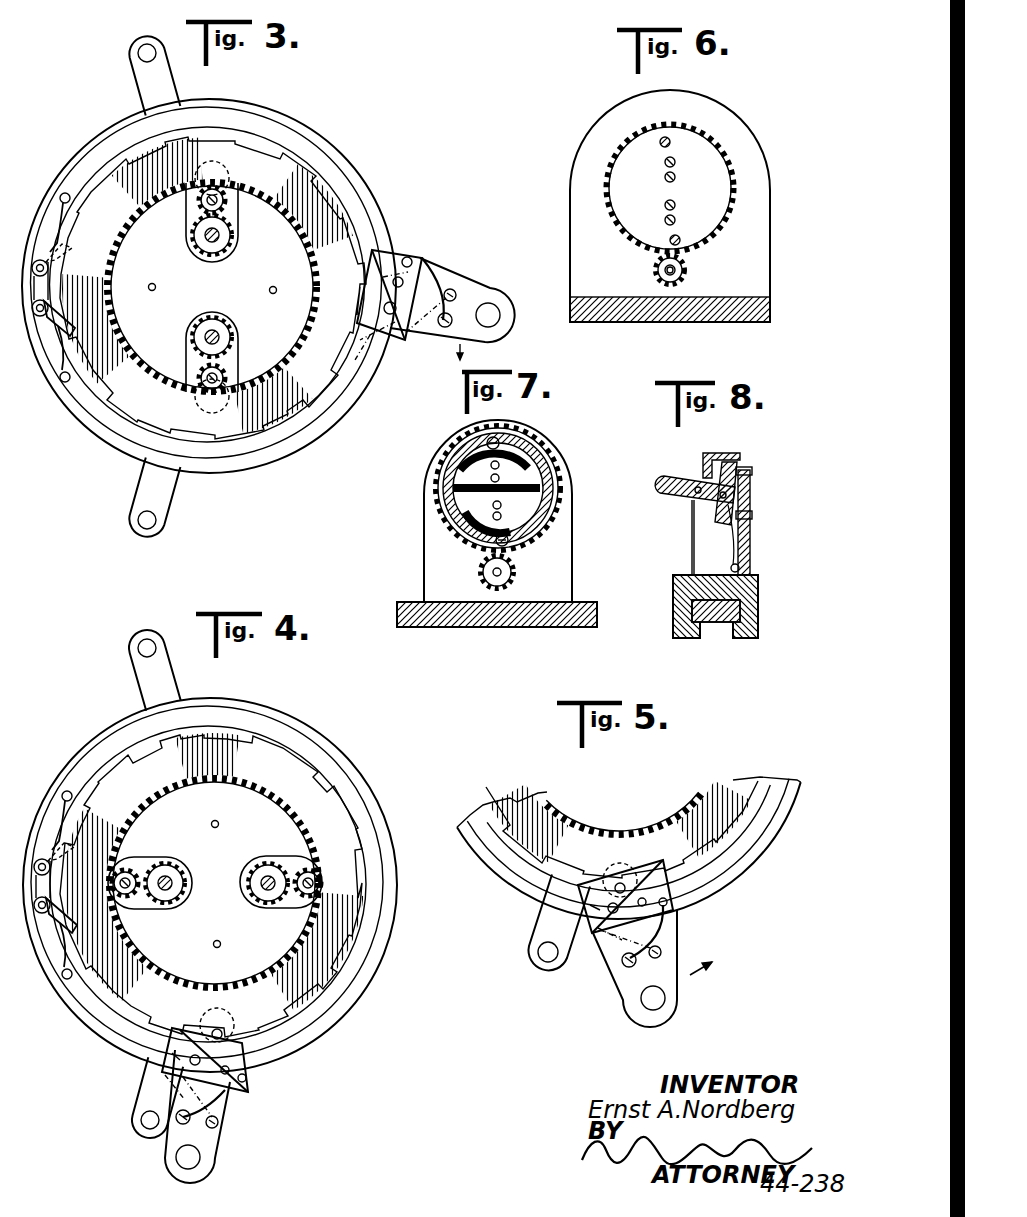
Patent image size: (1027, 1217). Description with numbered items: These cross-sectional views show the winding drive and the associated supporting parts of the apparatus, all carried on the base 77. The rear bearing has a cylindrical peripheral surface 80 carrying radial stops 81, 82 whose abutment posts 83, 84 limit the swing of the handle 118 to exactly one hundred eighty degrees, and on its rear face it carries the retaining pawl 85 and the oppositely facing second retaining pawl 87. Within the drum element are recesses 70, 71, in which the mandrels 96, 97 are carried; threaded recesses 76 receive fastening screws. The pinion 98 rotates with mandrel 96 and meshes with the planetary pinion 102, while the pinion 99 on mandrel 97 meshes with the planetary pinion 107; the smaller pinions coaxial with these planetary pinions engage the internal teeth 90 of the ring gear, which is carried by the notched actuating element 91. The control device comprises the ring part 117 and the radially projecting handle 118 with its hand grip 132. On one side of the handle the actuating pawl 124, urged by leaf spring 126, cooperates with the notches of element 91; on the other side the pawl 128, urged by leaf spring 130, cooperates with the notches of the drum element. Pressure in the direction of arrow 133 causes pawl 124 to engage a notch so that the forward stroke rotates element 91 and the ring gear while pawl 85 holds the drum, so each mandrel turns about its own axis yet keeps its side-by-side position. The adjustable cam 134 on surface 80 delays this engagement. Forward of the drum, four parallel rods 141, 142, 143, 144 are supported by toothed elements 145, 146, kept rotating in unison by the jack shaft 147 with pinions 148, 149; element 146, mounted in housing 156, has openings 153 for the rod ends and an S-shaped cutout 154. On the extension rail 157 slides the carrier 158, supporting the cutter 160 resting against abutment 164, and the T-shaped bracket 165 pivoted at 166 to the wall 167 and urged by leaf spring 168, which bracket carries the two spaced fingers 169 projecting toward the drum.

In FIG. 3, the recess 70 is at (236, 226).
In FIG. 4, the recess 70 is at (283, 858).
In FIG. 3, the recess 71 is at (240, 354).
In FIG. 4, the recess 71 is at (149, 910).
In FIG. 3, the threaded recesses 76 is at (156, 287).
In FIG. 4, the threaded recesses 76 is at (212, 823).
In FIG. 6, the base 77 is at (641, 318).
In FIG. 7, the base 77 is at (451, 622).
In FIG. 3, the peripheral surface 80 is at (317, 145).
In FIG. 4, the peripheral surface 80 is at (384, 840).
In FIG. 5, the peripheral surface 80 is at (629, 848).
In FIG. 3, the radial stop 81 is at (138, 81).
In FIG. 4, the radial stop 81 is at (138, 684).
In FIG. 3, the radial stop 82 is at (124, 488).
In FIG. 4, the radial stop 82 is at (136, 1098).
In FIG. 5, the radial stop 82 is at (540, 937).
In FIG. 3, the abutment post 83 is at (138, 53).
In FIG. 4, the abutment post 83 is at (139, 645).
In FIG. 3, the abutment post 84 is at (137, 520).
In FIG. 4, the abutment post 84 is at (140, 1121).
In FIG. 5, the abutment post 84 is at (546, 963).
In FIG. 3, the retaining pawl 85 is at (40, 257).
In FIG. 4, the retaining pawl 85 is at (42, 856).
In FIG. 3, the second retaining pawl 87 is at (58, 328).
In FIG. 4, the second retaining pawl 87 is at (60, 932).
In FIG. 3, the internal teeth 90 is at (308, 233).
In FIG. 4, the internal teeth 90 is at (274, 802).
In FIG. 5, the internal teeth 90 is at (657, 823).
In FIG. 3, the notched actuating element 91 is at (334, 162).
In FIG. 4, the notched actuating element 91 is at (308, 778).
In FIG. 5, the notched actuating element 91 is at (723, 817).
In FIG. 3, the mandrel 96 is at (228, 258).
In FIG. 4, the mandrel 96 is at (262, 872).
In FIG. 6, the mandrel 96 is at (662, 138).
In FIG. 7, the mandrel 96 is at (500, 442).
In FIG. 3, the mandrel 97 is at (222, 338).
In FIG. 4, the mandrel 97 is at (172, 878).
In FIG. 6, the mandrel 97 is at (681, 243).
In FIG. 7, the mandrel 97 is at (508, 546).
In FIG. 3, the pinion 98 is at (198, 253).
In FIG. 4, the pinion 98 is at (256, 905).
In FIG. 3, the pinion 99 is at (196, 326).
In FIG. 4, the pinion 99 is at (182, 895).
In FIG. 3, the planetary pinion 102 is at (198, 215).
In FIG. 4, the planetary pinion 102 is at (296, 902).
In FIG. 3, the planetary pinion 107 is at (198, 364).
In FIG. 4, the planetary pinion 107 is at (140, 870).
In FIG. 3, the ring part 117 is at (286, 145).
In FIG. 4, the ring part 117 is at (350, 800).
In FIG. 5, the ring part 117 is at (628, 838).
In FIG. 3, the handle 118 is at (473, 297).
In FIG. 4, the handle 118 is at (216, 1141).
In FIG. 5, the handle 118 is at (624, 990).
In FIG. 3, the actuating pawl 124 is at (400, 258).
In FIG. 4, the actuating pawl 124 is at (250, 1064).
In FIG. 5, the actuating pawl 124 is at (660, 888).
In FIG. 3, the leaf spring 126 is at (432, 286).
In FIG. 4, the leaf spring 126 is at (236, 1103).
In FIG. 5, the leaf spring 126 is at (660, 916).
In FIG. 3, the pawl 128 is at (378, 330).
In FIG. 4, the pawl 128 is at (172, 1054).
In FIG. 5, the pawl 128 is at (590, 912).
In FIG. 3, the leaf spring 130 is at (404, 330).
In FIG. 4, the leaf spring 130 is at (175, 1073).
In FIG. 5, the leaf spring 130 is at (623, 933).
In FIG. 3, the projecting portion 132 is at (498, 309).
In FIG. 4, the projecting portion 132 is at (200, 1161).
In FIG. 5, the projecting portion 132 is at (650, 1008).
In FIG. 5, the arrow 133 is at (695, 970).
In FIG. 3, the adjustable cam 134 is at (100, 134).
In FIG. 4, the adjustable cam 134 is at (406, 924).
In FIG. 5, the adjustable cam 134 is at (745, 860).
In FIG. 6, the rod 141 is at (675, 160).
In FIG. 6, the rod 142 is at (675, 175).
In FIG. 6, the rod 143 is at (676, 205).
In FIG. 6, the rod 144 is at (676, 220).
In FIG. 6, the supporting element 145 is at (619, 170).
In FIG. 7, the gear-like element 146 is at (568, 463).
In FIG. 6, the jack shaft 147 is at (684, 272).
In FIG. 6, the pinion 148 is at (662, 272).
In FIG. 7, the pinion 149 is at (483, 577).
In FIG. 7, the openings 153 is at (490, 466).
In FIG. 7, the S-shaped cutout 154 is at (530, 515).
In FIG. 7, the housing 156 is at (424, 539).
In FIG. 8, the extension rail 157 is at (742, 610).
In FIG. 8, the carrier 158 is at (759, 592).
In FIG. 8, the cutter 160 is at (710, 470).
In FIG. 8, the abutment 164 is at (735, 455).
In FIG. 8, the T-shaped bracket 165 is at (657, 490).
In FIG. 8, the pivot 166 is at (752, 493).
In FIG. 8, the wall 167 is at (700, 563).
In FIG. 8, the leaf spring 168 is at (732, 541).
In FIG. 8, the fingers 169 is at (720, 498).